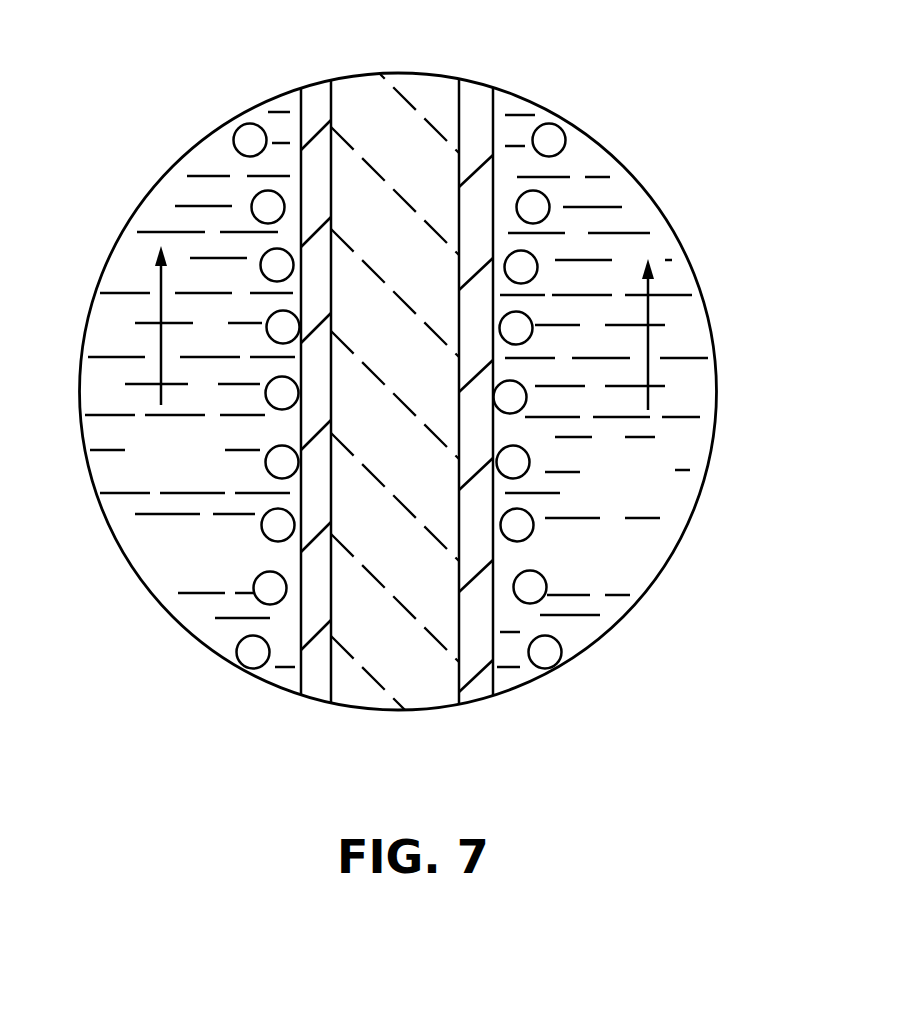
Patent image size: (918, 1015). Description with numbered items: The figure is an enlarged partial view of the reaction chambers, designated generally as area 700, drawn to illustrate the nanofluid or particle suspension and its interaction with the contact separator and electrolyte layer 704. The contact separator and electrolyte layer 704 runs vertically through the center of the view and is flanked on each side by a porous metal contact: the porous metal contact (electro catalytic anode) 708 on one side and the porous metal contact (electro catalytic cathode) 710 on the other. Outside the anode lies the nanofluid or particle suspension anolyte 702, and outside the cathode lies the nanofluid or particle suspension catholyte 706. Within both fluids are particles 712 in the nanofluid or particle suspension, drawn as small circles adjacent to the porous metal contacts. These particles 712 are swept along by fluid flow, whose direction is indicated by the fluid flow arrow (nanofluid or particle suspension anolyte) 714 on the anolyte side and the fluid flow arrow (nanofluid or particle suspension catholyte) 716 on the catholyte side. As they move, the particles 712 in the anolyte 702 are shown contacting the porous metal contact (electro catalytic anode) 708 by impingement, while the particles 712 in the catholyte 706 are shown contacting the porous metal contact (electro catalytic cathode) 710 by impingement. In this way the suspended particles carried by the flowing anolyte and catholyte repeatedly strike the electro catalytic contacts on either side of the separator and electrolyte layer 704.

The partial view of the reaction chambers 700 is at (563, 58).
The nanofluid or particle suspension anolyte 702 is at (207, 470).
The contact separator and electrolyte layer 704 is at (425, 678).
The nanofluid or particle suspension catholyte 706 is at (660, 492).
The porous metal contact (electro catalytic anode) 708 is at (320, 680).
The porous metal contact (electro catalytic cathode) 710 is at (478, 682).
The particles in nanofluid or particle suspension 712 is at (255, 584).
The fluid flow arrow (nanofluid or particle suspension anolyte) 714 is at (160, 303).
The fluid flow arrow (nanofluid or particle suspension catholyte) 716 is at (650, 302).